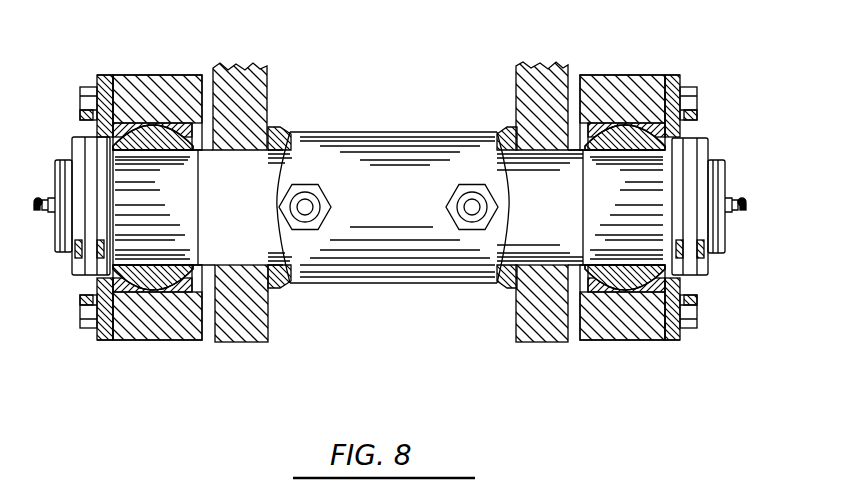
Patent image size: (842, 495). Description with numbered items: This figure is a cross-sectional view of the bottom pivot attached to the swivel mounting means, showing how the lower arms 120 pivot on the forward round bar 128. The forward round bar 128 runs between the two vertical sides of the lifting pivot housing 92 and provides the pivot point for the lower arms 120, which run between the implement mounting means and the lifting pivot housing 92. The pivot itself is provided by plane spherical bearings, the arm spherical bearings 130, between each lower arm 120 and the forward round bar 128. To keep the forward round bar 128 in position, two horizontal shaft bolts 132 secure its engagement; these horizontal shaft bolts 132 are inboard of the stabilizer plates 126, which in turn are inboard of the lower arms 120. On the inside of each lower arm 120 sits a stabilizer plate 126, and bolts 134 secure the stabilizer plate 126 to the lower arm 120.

The lifting pivot housing 92 is at (238, 342).
The lower arm 120 is at (170, 74).
The stabilizer plate 126 is at (104, 74).
The forward round bar 128 is at (266, 176).
The arm spherical bearing 130 is at (650, 338).
The horizontal shaft bolt 132 is at (468, 188).
The bolt 134 is at (82, 87).